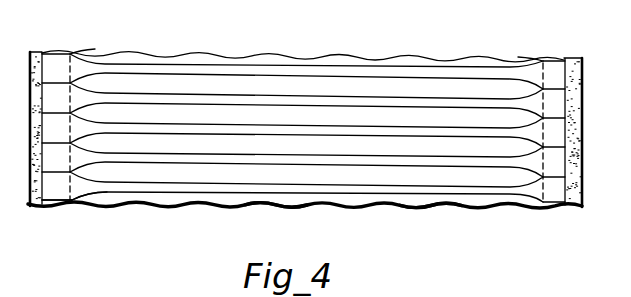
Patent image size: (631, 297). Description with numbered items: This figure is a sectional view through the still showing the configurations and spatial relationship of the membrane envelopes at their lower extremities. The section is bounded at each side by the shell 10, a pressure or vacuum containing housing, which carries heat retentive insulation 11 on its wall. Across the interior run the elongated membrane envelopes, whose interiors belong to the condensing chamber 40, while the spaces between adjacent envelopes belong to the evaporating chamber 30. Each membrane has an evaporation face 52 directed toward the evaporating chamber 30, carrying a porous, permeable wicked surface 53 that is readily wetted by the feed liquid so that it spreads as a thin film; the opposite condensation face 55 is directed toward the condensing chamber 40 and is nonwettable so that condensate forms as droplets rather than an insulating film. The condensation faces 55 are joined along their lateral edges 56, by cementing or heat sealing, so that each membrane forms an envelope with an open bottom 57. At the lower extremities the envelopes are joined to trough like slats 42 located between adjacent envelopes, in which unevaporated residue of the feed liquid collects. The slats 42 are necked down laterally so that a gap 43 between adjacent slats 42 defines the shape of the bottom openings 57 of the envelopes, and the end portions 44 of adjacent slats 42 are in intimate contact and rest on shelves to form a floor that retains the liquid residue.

The shell 10 is at (44, 52).
The heat retentive insulation 11 is at (31, 51).
The evaporating chamber 30 is at (377, 72).
The condensing chamber 40 is at (418, 88).
The trough like slats 42 is at (560, 101).
The gap 43 is at (439, 214).
The end portions 44 is at (55, 188).
The evaporation face 52 is at (305, 214).
The wicked surface 53 is at (176, 198).
The condensation face 55 is at (280, 178).
The lateral edges 56 is at (77, 173).
The open bottom 57 is at (443, 177).